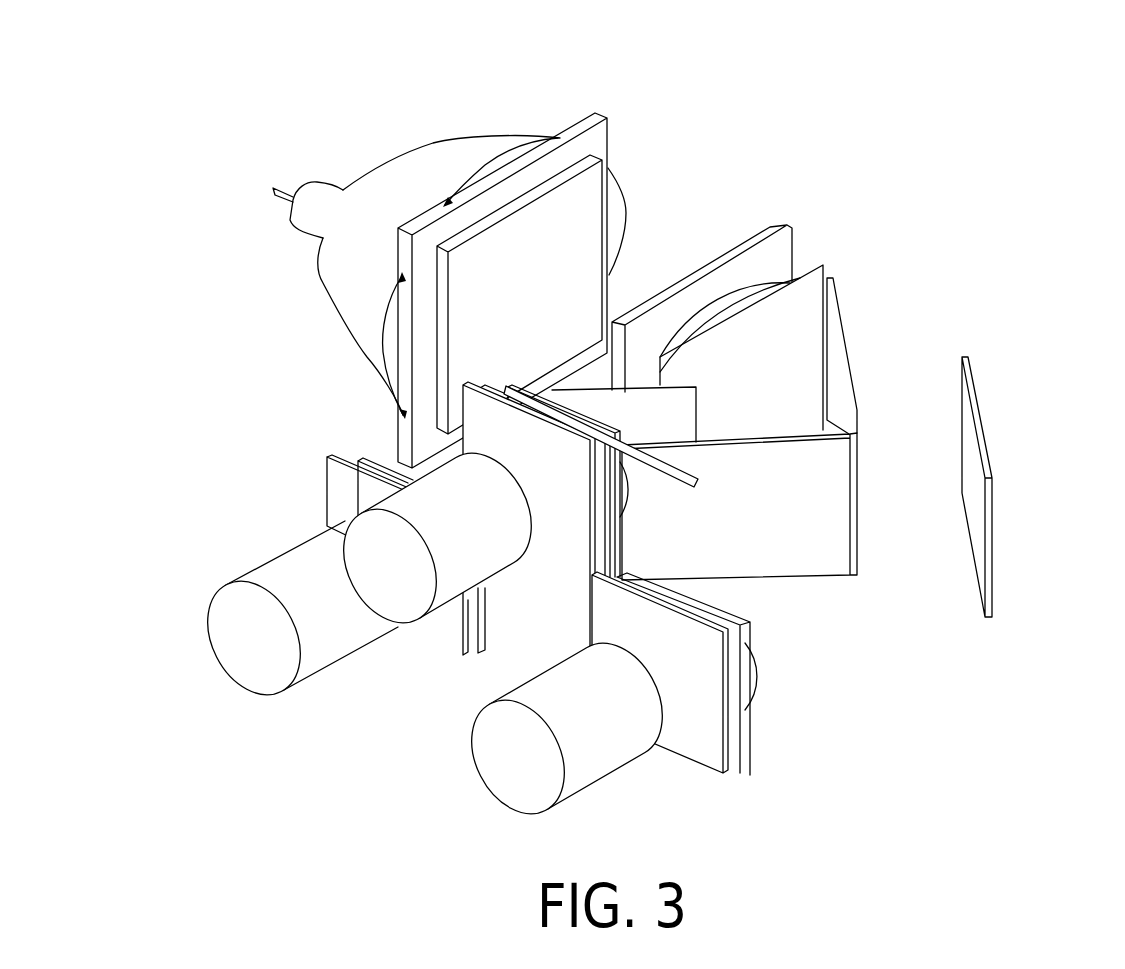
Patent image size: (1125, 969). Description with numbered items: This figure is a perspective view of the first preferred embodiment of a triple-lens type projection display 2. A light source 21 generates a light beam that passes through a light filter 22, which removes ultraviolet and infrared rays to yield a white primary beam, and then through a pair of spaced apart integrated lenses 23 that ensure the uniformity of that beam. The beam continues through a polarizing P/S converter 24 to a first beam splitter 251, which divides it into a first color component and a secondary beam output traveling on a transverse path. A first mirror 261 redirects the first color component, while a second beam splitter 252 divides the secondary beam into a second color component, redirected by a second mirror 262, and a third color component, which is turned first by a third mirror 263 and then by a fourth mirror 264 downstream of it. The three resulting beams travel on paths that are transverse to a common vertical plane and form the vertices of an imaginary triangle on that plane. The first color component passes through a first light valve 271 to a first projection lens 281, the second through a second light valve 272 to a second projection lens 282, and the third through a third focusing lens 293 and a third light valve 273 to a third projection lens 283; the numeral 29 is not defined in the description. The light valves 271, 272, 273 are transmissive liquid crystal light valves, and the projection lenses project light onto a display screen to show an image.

The triple-lens type projection display 2 is at (740, 150).
The light source 21 is at (408, 171).
The light filter 22 is at (576, 122).
The integrated lenses 23 is at (583, 206).
The P/S converter 24 is at (778, 260).
The first beam splitter 251 is at (845, 338).
The second beam splitter 252 is at (832, 553).
The first mirror 261 is at (977, 407).
The second mirror 262 is at (573, 404).
The third mirror 263 is at (597, 581).
The fourth mirror 264 is at (592, 462).
The first light valve 271 is at (695, 750).
The second light valve 272 is at (343, 500).
The third light valve 273 is at (475, 437).
The first projection lens 281 is at (507, 783).
The second projection lens 282 is at (242, 652).
The third projection lens 283 is at (368, 555).
The condenser lens 29 is at (757, 677).
The third focusing lens 293 is at (627, 488).